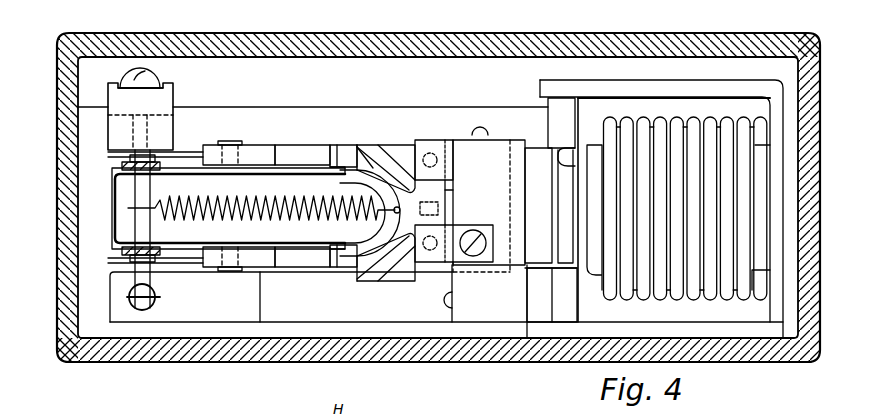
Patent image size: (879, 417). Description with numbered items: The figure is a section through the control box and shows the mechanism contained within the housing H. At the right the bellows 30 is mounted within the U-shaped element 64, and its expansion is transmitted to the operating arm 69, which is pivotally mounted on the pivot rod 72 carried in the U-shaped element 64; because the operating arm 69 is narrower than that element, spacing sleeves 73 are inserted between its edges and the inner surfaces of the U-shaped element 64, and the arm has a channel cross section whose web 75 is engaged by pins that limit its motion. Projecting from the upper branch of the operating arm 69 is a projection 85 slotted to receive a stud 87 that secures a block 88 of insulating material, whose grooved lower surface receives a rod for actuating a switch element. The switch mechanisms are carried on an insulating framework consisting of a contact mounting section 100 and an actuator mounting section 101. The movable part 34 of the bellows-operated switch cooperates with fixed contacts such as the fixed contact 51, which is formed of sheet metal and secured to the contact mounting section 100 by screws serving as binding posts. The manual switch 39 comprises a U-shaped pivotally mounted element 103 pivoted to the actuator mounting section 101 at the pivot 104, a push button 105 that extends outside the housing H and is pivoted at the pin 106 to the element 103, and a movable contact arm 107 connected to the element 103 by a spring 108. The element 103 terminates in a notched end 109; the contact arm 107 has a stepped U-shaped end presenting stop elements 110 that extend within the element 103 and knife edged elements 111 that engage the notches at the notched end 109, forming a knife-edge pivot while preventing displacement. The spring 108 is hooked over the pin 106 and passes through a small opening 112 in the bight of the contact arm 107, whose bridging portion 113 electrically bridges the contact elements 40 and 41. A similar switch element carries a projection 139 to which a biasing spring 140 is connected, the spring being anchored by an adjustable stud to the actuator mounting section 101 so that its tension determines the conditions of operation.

The housing H is at (724, 33).
The bellows 30 is at (693, 117).
The movable part of switch mechanism 34 is at (365, 160).
The manual switch element 39 is at (380, 257).
The contact element 40 is at (462, 232).
The contact element 41 is at (430, 152).
The fixed contact 51 is at (447, 278).
The U-shaped element 64 is at (600, 80).
The operating arm 69 is at (580, 210).
The pivot rod 72 is at (556, 185).
The spacing sleeve 73 is at (548, 121).
The web 75 is at (566, 148).
The projection 85 is at (148, 89).
The stud 87 is at (157, 79).
The block of insulating material 88 is at (173, 100).
The contact mounting section 100 is at (489, 206).
The actuator mounting section 101 is at (264, 152).
The pivotally mounted element 103 is at (181, 168).
The pivot 104 is at (234, 144).
The push button 105 is at (120, 163).
The pivot pin 106 is at (136, 225).
The movable contact arm 107 is at (384, 176).
The spring 108 is at (261, 200).
The notched end 109 is at (333, 162).
The stop element 110 is at (342, 179).
The knife edged element 111 is at (344, 150).
The opening 112 is at (398, 208).
The bridging portion 113 is at (447, 190).
The projection 139 is at (150, 310).
The biasing spring 140 is at (158, 298).